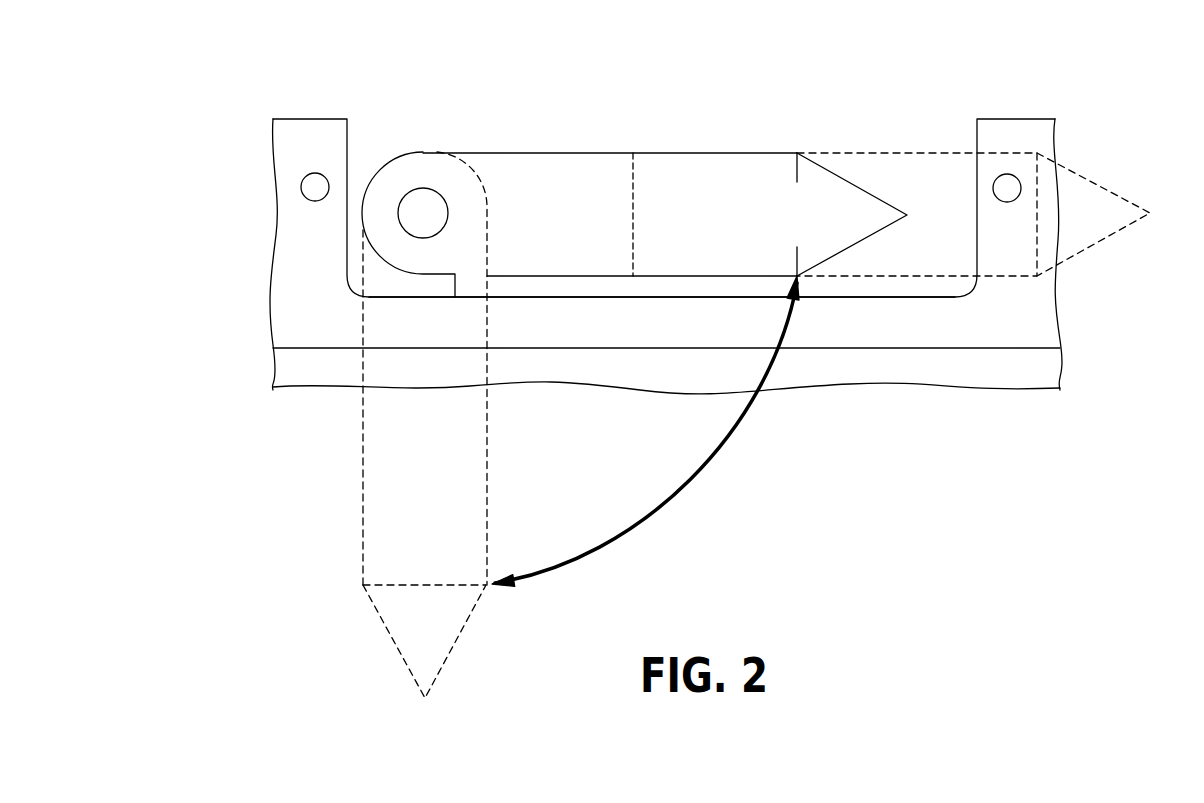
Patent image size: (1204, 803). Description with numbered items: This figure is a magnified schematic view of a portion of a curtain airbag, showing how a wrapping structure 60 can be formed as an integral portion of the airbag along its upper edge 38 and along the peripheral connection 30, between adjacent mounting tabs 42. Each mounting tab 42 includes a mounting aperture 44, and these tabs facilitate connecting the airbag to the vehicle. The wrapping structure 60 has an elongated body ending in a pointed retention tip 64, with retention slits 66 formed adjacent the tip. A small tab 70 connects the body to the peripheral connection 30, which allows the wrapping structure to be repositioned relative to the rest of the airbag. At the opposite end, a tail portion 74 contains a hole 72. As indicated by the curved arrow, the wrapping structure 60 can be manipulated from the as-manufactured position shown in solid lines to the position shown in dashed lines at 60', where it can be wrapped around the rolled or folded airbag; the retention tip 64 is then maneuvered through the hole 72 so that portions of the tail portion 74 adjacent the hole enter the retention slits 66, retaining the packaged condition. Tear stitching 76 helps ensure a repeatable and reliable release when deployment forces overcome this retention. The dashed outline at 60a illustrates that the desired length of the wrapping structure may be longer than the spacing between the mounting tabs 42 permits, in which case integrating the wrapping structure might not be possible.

The peripheral connection 30 is at (305, 325).
The upper edge 38 is at (303, 270).
The mounting tab 42 is at (318, 135).
The mounting aperture 44 is at (315, 185).
The wrapping structure 60 is at (610, 182).
The wrapping structure of desired length 60a is at (935, 150).
The wrapping structure in manipulated position 60' is at (389, 608).
The retention tip 64 is at (847, 197).
The retention slit 66 is at (797, 168).
The small tab 70 is at (470, 281).
The hole 72 is at (433, 208).
The tail portion 74 is at (408, 176).
The tear stitching 76 is at (633, 215).